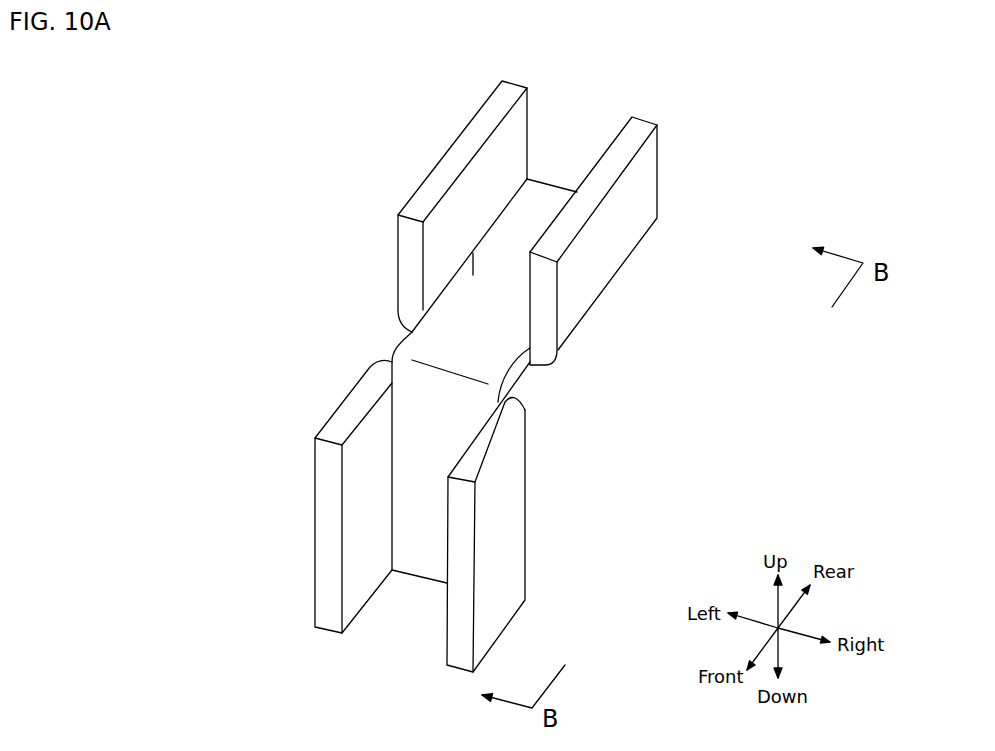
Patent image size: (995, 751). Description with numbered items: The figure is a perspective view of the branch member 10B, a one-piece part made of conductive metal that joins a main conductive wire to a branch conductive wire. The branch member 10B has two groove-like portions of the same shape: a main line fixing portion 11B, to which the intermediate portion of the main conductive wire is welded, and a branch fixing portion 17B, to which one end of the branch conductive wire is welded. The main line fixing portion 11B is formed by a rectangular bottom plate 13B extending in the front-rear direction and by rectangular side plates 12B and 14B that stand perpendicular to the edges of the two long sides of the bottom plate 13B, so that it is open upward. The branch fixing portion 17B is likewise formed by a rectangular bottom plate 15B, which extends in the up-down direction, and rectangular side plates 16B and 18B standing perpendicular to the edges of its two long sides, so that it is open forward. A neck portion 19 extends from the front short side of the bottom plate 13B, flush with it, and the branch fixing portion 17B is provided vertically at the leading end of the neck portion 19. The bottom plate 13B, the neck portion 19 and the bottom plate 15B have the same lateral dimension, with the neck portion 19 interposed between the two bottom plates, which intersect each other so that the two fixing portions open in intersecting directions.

The branch member 10B is at (810, 110).
The main line fixing portion 11B is at (592, 143).
The side plate 12B is at (652, 178).
The bottom plate 13B is at (545, 198).
The side plate 14B is at (447, 160).
The bottom plate 15B is at (428, 563).
The side plate 16B is at (325, 595).
The branch fixing portion 17B is at (395, 607).
The side plate 18B is at (512, 562).
The neck portion 19 is at (497, 374).